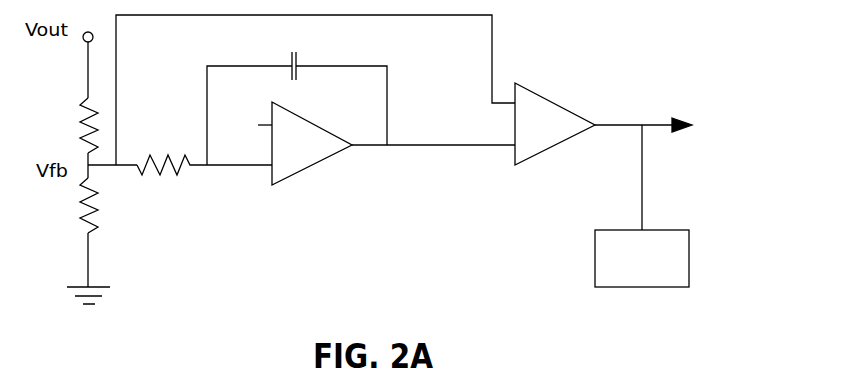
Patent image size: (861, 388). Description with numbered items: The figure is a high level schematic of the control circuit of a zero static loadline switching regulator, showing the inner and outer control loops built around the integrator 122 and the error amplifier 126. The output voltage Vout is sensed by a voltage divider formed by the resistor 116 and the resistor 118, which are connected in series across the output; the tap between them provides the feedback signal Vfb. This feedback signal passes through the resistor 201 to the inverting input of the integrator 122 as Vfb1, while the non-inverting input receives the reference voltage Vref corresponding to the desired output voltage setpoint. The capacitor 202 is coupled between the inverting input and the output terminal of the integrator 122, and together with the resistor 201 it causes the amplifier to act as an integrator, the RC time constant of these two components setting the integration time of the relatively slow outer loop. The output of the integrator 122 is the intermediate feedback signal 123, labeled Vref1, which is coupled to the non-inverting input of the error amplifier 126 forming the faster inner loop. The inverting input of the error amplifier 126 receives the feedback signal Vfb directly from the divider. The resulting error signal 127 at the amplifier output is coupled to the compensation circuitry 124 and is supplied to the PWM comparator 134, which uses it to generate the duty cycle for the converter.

The resistor 116 is at (80, 122).
The resistor 118 is at (83, 222).
The resistor 201 is at (142, 178).
The capacitor 202 is at (296, 52).
The integrator 122 is at (283, 182).
The intermediate feedback signal 123 is at (460, 148).
The error amplifier 126 is at (555, 147).
The error signal 127 is at (613, 115).
The compensation circuitry 124 is at (689, 258).
The PWM comparator 134 is at (751, 122).